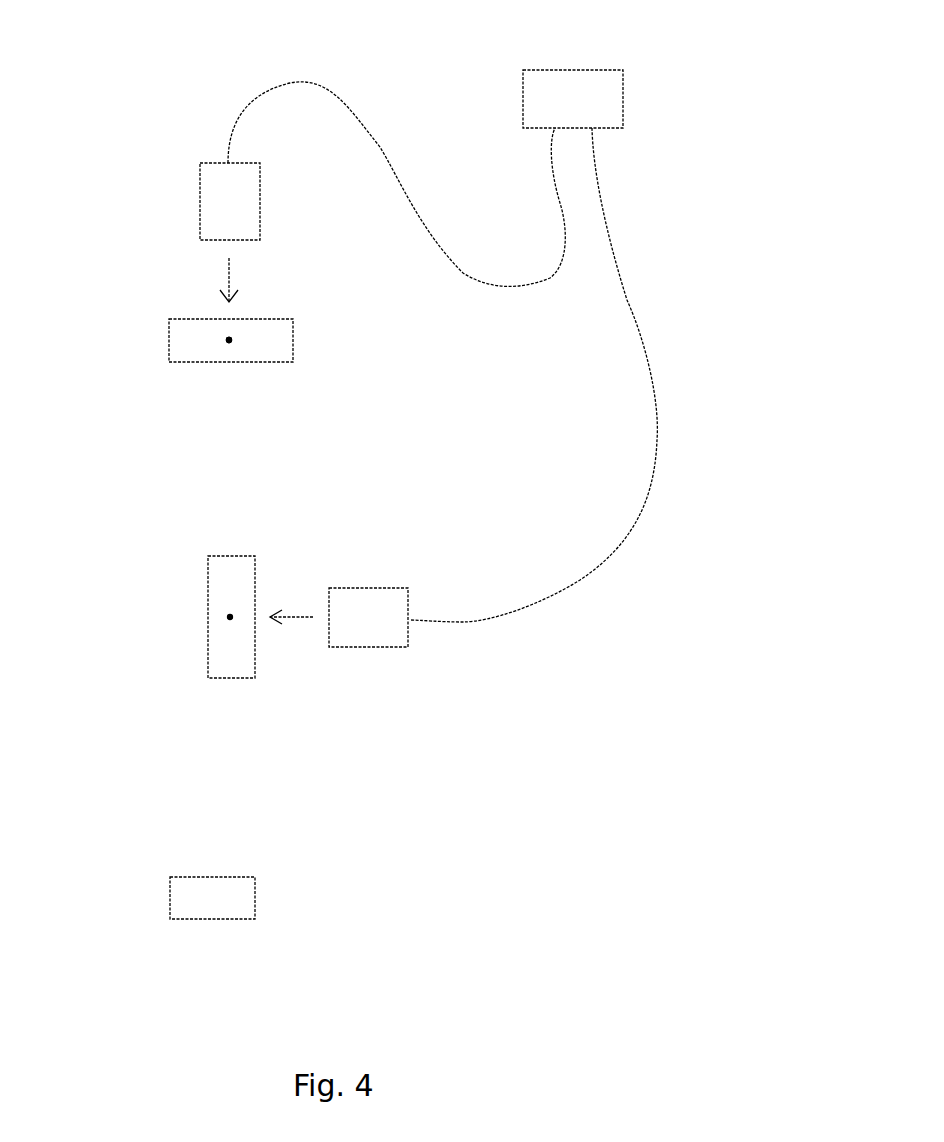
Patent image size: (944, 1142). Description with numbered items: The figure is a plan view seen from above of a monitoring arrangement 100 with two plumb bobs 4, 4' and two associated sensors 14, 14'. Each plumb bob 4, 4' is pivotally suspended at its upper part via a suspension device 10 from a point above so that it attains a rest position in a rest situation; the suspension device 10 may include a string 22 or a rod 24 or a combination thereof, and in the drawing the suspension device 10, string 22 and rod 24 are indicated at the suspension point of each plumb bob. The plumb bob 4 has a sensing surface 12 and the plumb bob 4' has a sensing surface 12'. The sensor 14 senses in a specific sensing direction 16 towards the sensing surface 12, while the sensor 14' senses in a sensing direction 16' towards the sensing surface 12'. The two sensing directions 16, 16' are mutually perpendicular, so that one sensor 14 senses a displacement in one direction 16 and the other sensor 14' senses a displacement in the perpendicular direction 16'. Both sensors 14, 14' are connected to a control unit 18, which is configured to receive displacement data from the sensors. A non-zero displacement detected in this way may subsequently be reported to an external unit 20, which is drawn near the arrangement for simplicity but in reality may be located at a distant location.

The system 100 is at (140, 82).
The control unit 18 is at (572, 92).
The sensor 14 is at (263, 201).
The sensing direction 16 is at (193, 280).
The sensing surface 12 is at (236, 317).
The plumb bob 4 is at (306, 345).
The suspension device 10 is at (232, 342).
The string 22 is at (229, 340).
The rod 24 is at (229, 340).
The sensor 14' is at (369, 582).
The sensing surface 12' is at (256, 606).
The plumb bob 4' is at (179, 583).
The sensing direction 16' is at (295, 663).
The external unit 20 is at (237, 902).